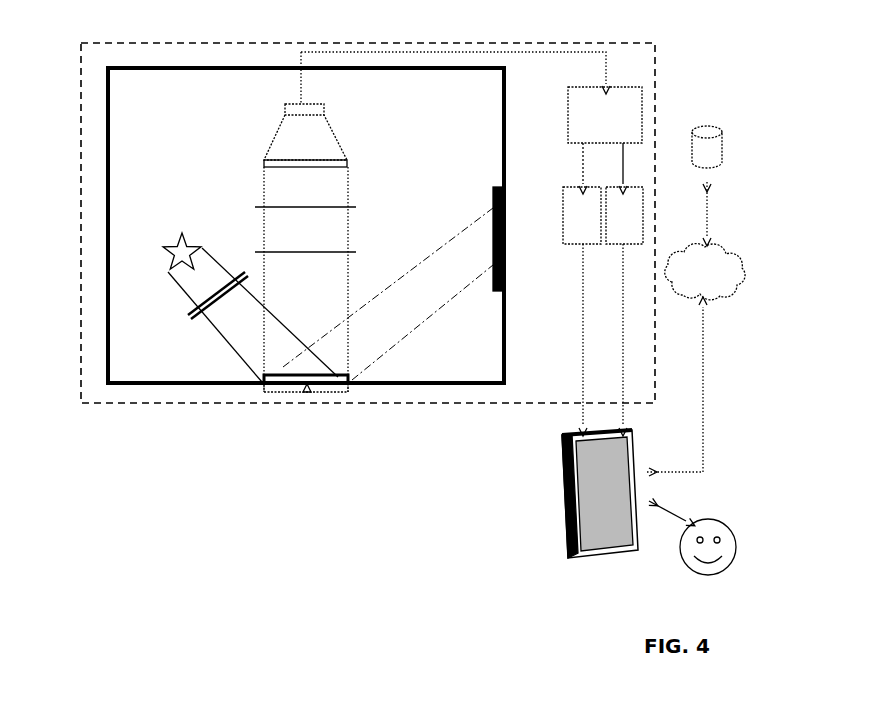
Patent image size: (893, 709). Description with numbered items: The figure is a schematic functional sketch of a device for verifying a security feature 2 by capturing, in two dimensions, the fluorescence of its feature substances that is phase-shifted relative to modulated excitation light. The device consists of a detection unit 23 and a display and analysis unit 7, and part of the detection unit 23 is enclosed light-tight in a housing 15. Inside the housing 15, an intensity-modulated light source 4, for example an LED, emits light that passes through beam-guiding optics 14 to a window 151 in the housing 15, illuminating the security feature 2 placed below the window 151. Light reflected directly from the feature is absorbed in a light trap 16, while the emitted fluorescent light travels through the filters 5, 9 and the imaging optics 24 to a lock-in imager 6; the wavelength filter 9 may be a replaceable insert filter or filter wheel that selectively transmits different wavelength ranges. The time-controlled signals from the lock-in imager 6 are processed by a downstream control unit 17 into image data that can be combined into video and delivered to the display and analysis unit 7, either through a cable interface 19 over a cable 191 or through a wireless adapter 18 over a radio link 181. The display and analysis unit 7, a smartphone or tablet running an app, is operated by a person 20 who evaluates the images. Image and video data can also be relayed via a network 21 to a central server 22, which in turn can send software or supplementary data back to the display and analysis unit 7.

The security feature 2 is at (288, 392).
The light source 4 is at (168, 243).
The filter 5 is at (262, 252).
The lock-in imager 6 is at (285, 113).
The display and analysis unit 7 is at (620, 553).
The wavelength filter 9 is at (262, 207).
The optics 14 is at (188, 315).
The housing 15 is at (385, 383).
The light trap 16 is at (493, 197).
The control unit 17 is at (471, 118).
The wireless adapter 18 is at (624, 215).
The cable interface 19 is at (582, 215).
The person 20 is at (700, 528).
The network 21 is at (705, 272).
The central server 22 is at (692, 140).
The detection unit 23 is at (80, 230).
The imaging optics 24 is at (280, 163).
The window 151 is at (307, 392).
The radio link 181 is at (623, 340).
The cable 191 is at (583, 305).